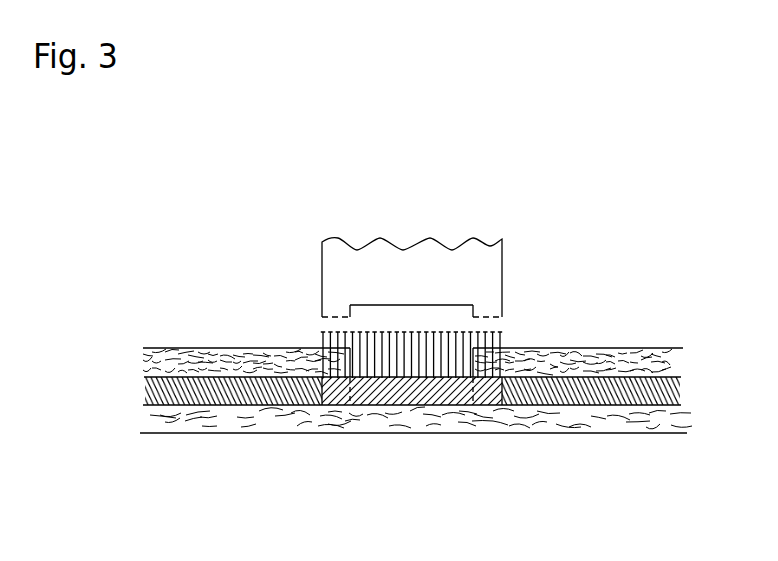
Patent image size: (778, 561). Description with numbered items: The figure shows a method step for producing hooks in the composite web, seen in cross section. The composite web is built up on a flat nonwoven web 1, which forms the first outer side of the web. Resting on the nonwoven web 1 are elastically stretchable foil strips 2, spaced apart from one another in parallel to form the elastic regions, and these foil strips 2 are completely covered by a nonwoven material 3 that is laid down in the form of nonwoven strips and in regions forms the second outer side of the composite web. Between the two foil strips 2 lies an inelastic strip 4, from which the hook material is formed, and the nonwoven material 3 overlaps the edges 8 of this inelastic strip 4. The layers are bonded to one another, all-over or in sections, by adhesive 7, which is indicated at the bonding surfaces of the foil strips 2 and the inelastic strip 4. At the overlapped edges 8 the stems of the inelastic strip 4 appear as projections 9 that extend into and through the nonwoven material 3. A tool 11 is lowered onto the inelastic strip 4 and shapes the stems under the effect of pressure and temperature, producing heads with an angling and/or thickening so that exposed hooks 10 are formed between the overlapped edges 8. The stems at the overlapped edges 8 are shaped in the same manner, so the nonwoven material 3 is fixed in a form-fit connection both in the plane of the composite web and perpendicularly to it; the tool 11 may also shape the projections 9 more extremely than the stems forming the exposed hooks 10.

The flat nonwoven web 1 is at (587, 433).
The elastically stretchable foil strips 2 is at (663, 390).
The nonwoven material 3 is at (668, 358).
The inelastic strip 4 is at (363, 393).
The adhesive 7 is at (627, 380).
The edges 8 is at (322, 407).
The projections 9 is at (322, 330).
The exposed hooks 10 is at (456, 352).
The tool 11 is at (487, 268).